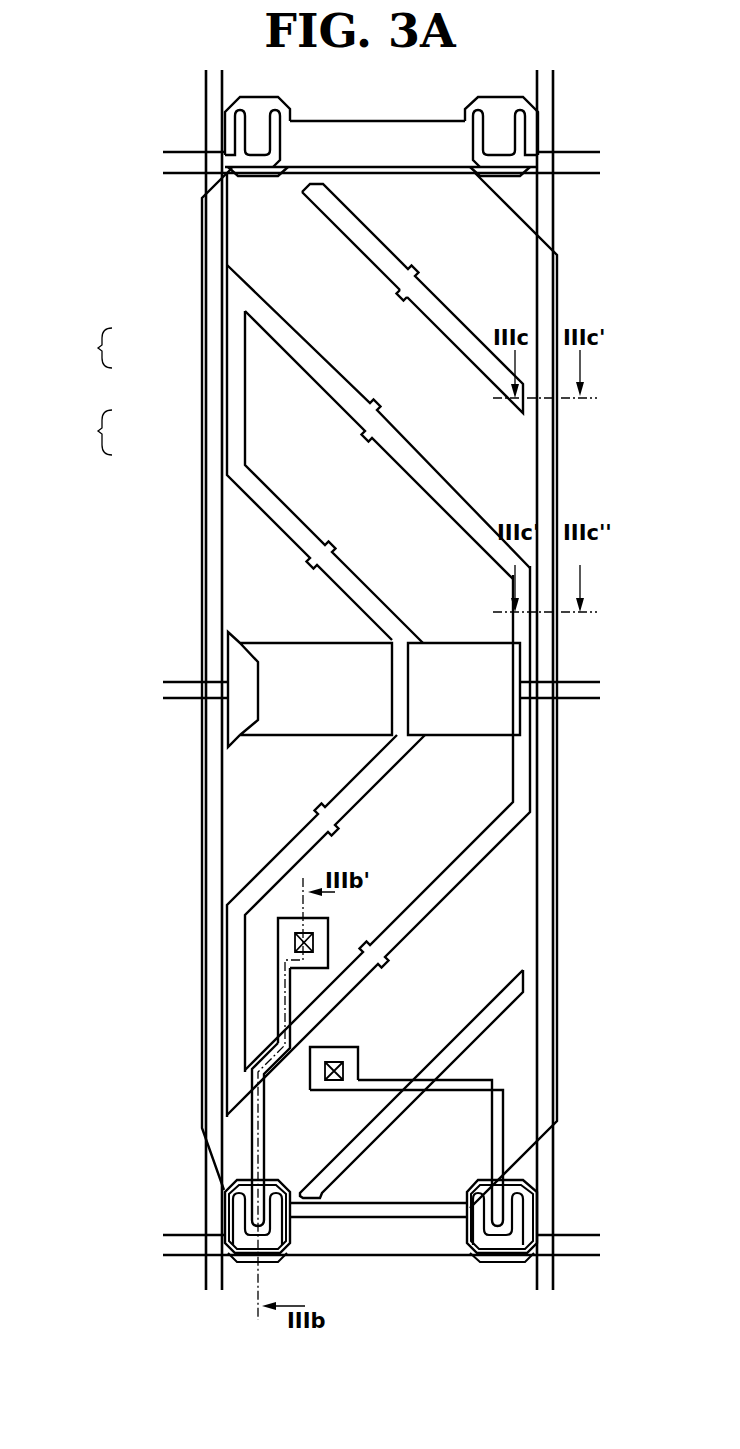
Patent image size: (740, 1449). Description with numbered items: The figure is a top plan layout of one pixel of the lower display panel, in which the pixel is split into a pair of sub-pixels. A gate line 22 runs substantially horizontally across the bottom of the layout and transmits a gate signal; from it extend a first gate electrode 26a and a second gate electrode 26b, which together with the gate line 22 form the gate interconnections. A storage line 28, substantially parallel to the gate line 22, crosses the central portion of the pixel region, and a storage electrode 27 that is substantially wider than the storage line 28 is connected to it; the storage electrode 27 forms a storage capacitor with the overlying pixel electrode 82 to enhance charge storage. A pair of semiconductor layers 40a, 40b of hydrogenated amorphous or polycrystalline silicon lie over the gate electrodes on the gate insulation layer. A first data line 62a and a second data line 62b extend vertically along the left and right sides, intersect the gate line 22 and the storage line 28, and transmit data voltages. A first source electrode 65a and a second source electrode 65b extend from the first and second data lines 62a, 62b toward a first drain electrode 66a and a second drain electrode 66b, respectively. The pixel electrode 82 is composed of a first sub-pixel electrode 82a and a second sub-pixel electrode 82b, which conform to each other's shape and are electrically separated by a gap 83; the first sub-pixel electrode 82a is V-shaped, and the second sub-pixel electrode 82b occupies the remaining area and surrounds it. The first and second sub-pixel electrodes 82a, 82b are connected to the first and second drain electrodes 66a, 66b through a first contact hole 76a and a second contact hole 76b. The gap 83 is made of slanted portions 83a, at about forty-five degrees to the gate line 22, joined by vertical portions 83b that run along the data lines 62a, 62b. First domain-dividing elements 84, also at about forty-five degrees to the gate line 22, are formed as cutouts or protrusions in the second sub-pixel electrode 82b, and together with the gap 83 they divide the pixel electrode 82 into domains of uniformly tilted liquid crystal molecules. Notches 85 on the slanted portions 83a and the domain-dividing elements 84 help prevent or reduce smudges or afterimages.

The gate line 22 is at (403, 1260).
The first gate electrode 26a is at (237, 1182).
The second gate electrode 26b is at (523, 1182).
The storage electrode 27 is at (462, 738).
The storage line 28 is at (580, 681).
The semiconductor layer 40a is at (290, 1237).
The semiconductor layer 40b is at (457, 1242).
The first data line 62a is at (222, 550).
The second data line 62b is at (540, 206).
The first source electrode 65a is at (247, 1267).
The second source electrode 65b is at (497, 1263).
The first drain electrode 66a is at (278, 983).
The second drain electrode 66b is at (480, 1085).
The first contact hole 76a is at (293, 940).
The second contact hole 76b is at (333, 1060).
The pixel electrode 82 is at (91, 432).
The first sub-pixel electrode 82a is at (247, 447).
The second sub-pixel electrode 82b is at (200, 408).
The gap 83 is at (91, 348).
The slanted portion 83a is at (268, 320).
The vertical portion 83b is at (237, 367).
The first domain-dividing element 84 is at (372, 228).
The notch 85 is at (405, 302).